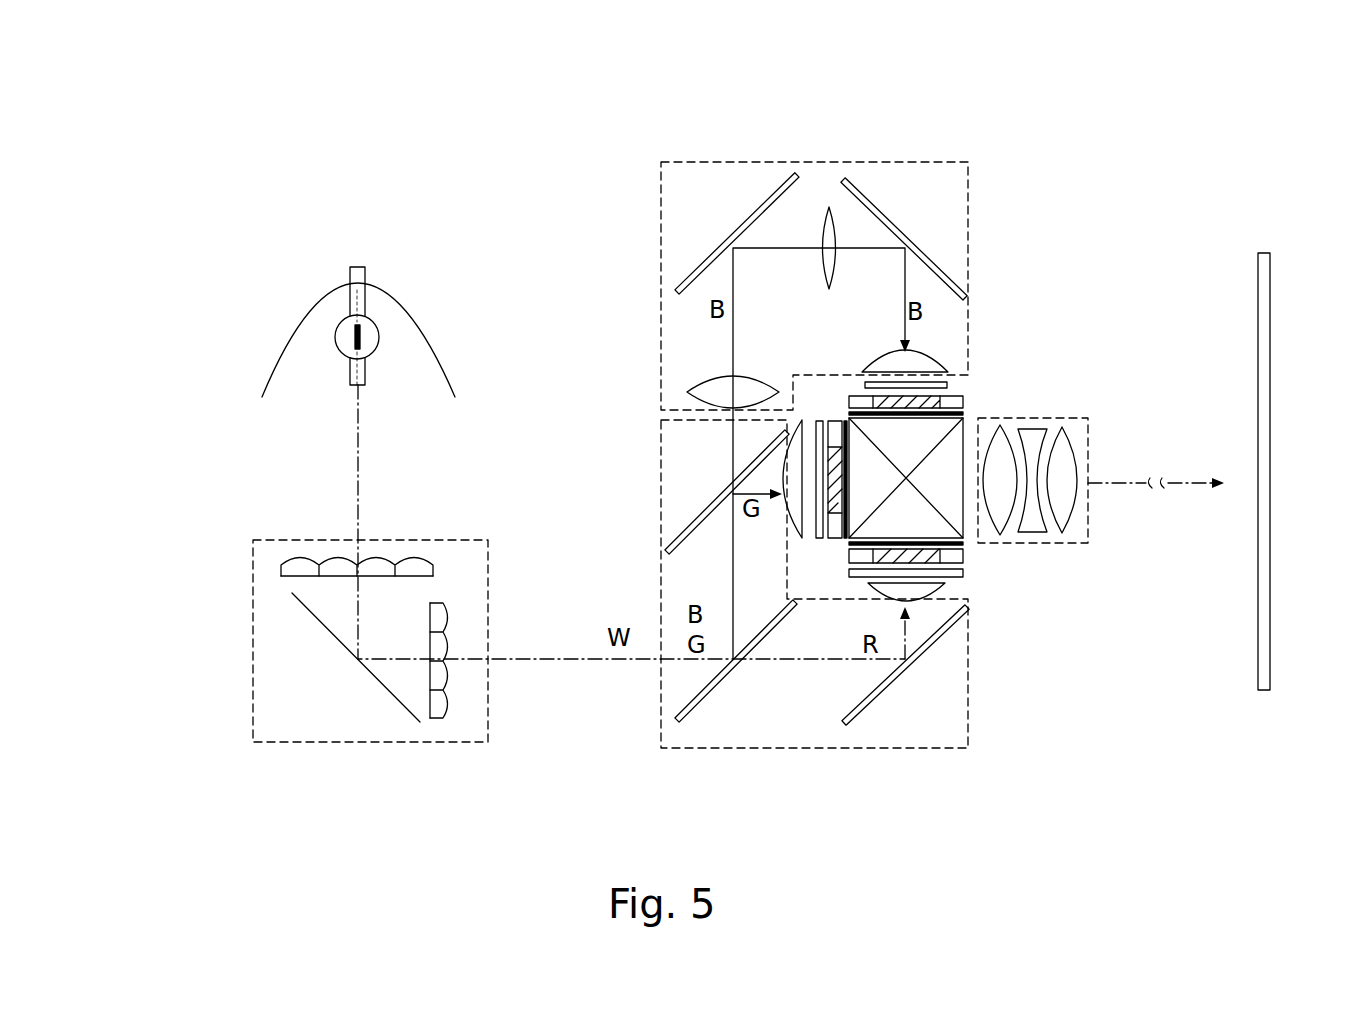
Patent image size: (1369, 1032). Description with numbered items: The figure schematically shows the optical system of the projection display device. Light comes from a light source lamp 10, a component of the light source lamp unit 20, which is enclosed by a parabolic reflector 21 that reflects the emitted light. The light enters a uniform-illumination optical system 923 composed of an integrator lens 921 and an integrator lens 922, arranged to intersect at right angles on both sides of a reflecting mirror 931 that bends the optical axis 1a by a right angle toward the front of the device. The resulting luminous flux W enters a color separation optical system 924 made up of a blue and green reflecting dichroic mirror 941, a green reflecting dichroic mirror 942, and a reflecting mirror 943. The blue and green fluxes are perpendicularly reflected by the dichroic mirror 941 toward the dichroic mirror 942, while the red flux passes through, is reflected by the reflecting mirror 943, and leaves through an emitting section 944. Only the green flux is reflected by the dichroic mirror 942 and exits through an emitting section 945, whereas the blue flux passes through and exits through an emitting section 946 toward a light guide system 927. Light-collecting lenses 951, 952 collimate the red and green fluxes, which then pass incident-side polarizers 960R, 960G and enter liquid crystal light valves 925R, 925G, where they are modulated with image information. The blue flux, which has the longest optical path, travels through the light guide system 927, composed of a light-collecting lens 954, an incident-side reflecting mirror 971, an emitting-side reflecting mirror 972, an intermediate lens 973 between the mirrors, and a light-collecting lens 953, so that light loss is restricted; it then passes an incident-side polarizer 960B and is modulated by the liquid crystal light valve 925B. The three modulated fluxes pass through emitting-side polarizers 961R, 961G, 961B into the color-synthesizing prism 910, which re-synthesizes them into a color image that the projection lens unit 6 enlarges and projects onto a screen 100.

The optical axis 1a is at (357, 483).
The light source lamp 10 is at (377, 325).
The light source lamp unit 20 is at (297, 318).
The parabolic reflector 21 is at (278, 350).
The screen 100 is at (1269, 338).
The projection lens unit 6 is at (1090, 420).
The color-synthesizing prism 910 is at (963, 433).
The integrator lens 921 is at (300, 560).
The integrator lens 922 is at (437, 718).
The uniform-illumination optical system 923 is at (252, 645).
The color separation optical system 924 is at (970, 727).
The liquid crystal light valve 925B is at (962, 394).
The liquid crystal light valve 925G is at (830, 420).
The liquid crystal light valve 925R is at (965, 562).
The light guide system 927 is at (695, 158).
The reflecting mirror 931 is at (376, 682).
The blue and green reflecting dichroic mirror 941 is at (693, 718).
The green reflecting dichroic mirror 942 is at (703, 512).
The reflecting mirror 943 is at (860, 720).
The emitting section 944 is at (928, 598).
The emitting section 945 is at (792, 500).
The emitting section 946 is at (715, 412).
The light-collecting lens 951 is at (945, 585).
The light-collecting lens 952 is at (802, 420).
The light-collecting lens 953 is at (930, 352).
The light-collecting lens 954 is at (707, 377).
The incident-side polarizer 960B is at (957, 383).
The incident-side polarizer 960G is at (819, 540).
The incident-side polarizer 960R is at (965, 573).
The emitting-side polarizer 961B is at (963, 408).
The emitting-side polarizer 961G is at (835, 540).
The emitting-side polarizer 961R is at (963, 549).
The incident-side reflecting mirror 971 is at (706, 243).
The emitting-side reflecting mirror 972 is at (885, 215).
The intermediate lens 973 is at (827, 207).